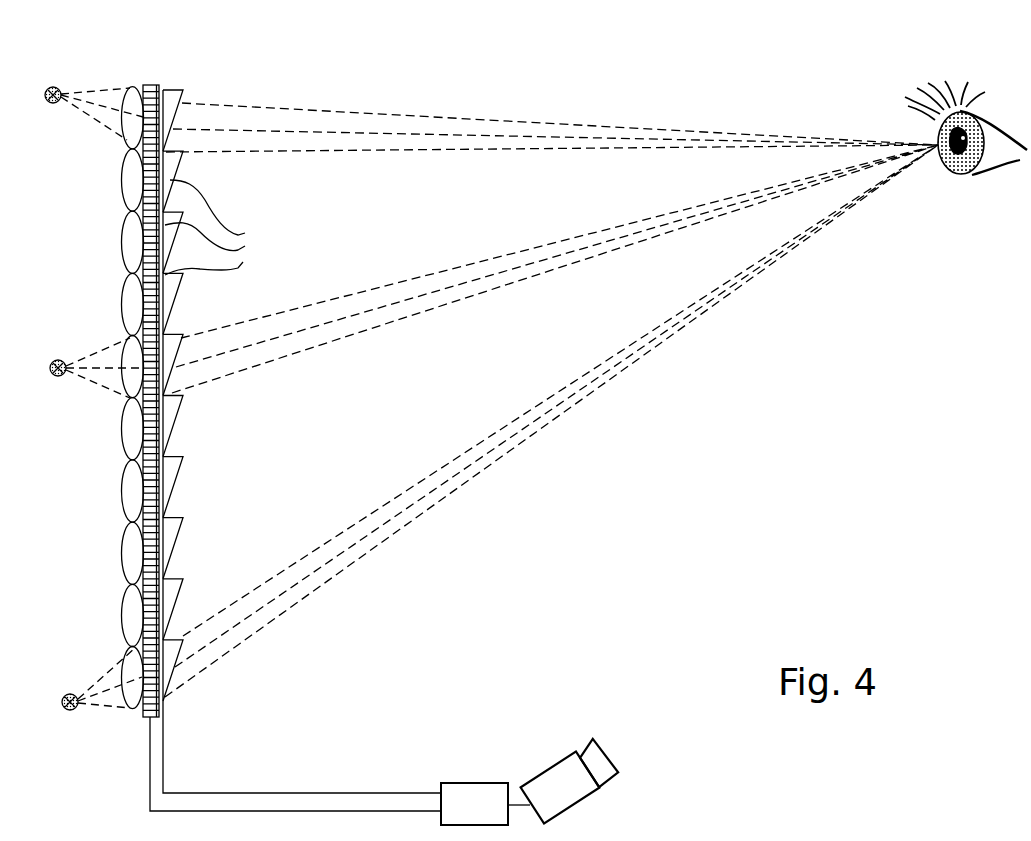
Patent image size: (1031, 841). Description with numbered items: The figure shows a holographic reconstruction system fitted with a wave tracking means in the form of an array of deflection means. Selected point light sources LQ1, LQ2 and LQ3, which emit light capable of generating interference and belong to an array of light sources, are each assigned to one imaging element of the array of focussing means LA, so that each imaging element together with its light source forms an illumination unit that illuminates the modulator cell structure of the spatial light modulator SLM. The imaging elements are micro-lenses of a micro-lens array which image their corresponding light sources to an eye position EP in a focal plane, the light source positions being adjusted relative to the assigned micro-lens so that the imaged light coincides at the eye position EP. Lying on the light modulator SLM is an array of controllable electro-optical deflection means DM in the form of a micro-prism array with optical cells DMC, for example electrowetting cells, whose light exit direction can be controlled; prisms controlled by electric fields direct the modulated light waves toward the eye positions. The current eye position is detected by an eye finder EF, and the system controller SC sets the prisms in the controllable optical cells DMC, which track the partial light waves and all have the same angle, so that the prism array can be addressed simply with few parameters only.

The spatial light modulator SLM is at (146, 85).
The array of focussing means LA is at (124, 418).
The array of controllable electro-optical deflection means DM is at (302, 434).
The controllable optical cells DMC is at (230, 227).
The point light source LQ1 is at (89, 97).
The point light source LQ2 is at (92, 355).
The point light source LQ3 is at (98, 676).
The eye position EP is at (966, 156).
The system controller SC is at (474, 804).
The eye finder EF is at (564, 780).